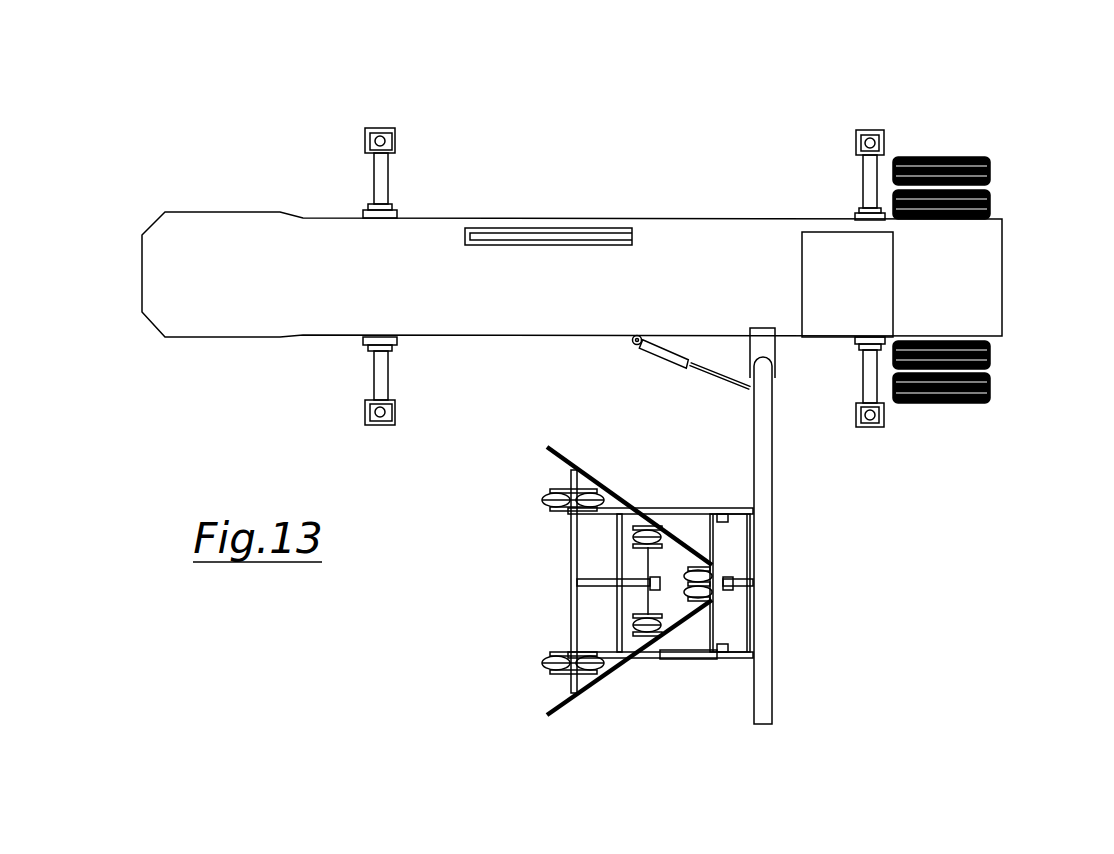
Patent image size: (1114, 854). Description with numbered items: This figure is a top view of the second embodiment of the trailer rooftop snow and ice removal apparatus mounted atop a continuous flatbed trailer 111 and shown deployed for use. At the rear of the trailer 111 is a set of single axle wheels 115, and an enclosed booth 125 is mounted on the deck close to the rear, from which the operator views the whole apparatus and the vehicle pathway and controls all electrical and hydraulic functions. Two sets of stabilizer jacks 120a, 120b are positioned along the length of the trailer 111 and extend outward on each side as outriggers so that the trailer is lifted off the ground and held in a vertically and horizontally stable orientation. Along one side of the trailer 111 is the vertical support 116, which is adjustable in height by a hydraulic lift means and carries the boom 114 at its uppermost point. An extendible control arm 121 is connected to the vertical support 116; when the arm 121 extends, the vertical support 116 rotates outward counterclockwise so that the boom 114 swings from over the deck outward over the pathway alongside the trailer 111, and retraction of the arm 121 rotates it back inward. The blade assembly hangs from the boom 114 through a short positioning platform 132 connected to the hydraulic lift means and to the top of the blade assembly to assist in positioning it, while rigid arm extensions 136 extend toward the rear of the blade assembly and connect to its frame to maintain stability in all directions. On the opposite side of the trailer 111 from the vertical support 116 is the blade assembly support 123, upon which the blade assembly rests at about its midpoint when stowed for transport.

The flatbed trailer 111 is at (165, 220).
The boom 114 is at (768, 576).
The single axle wheels 115 is at (992, 170).
The vertical support 116 is at (760, 335).
The stabilizing jacks 120a is at (376, 130).
The stabilizing jacks 120b is at (869, 132).
The extendible arm 121 is at (670, 350).
The blade assembly support 123 is at (552, 238).
The enclosed booth 125 is at (827, 292).
The positioning platform 132 is at (730, 512).
The rigid arm extensions 136 is at (667, 508).